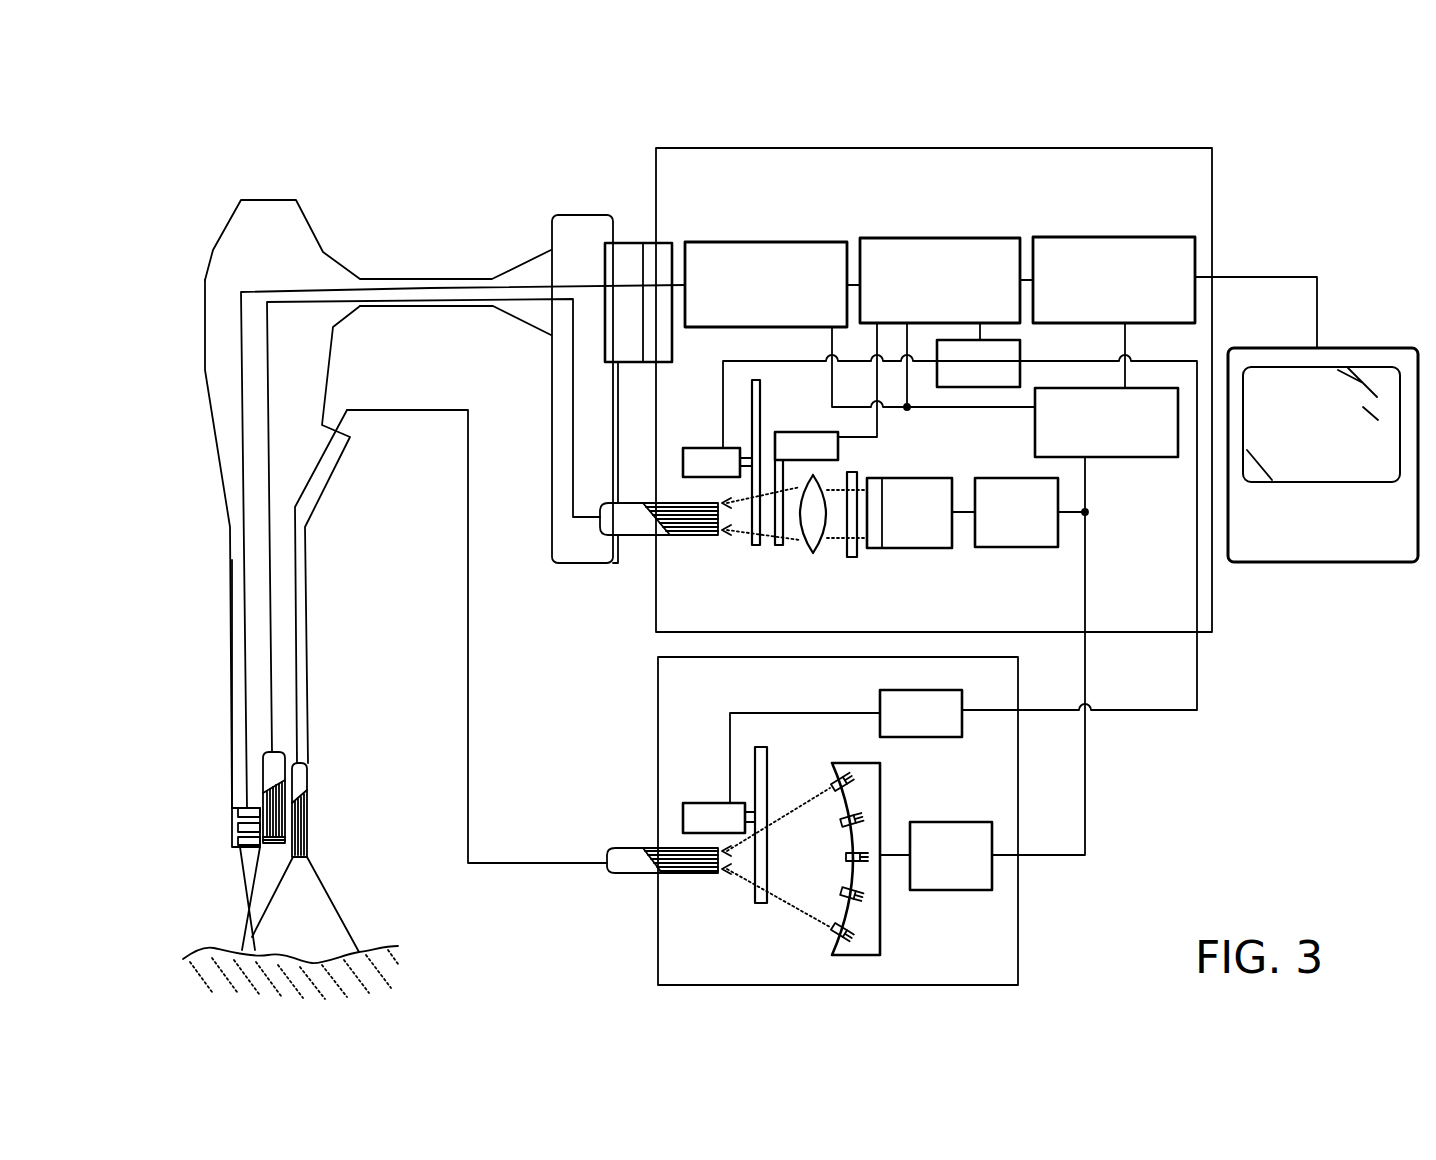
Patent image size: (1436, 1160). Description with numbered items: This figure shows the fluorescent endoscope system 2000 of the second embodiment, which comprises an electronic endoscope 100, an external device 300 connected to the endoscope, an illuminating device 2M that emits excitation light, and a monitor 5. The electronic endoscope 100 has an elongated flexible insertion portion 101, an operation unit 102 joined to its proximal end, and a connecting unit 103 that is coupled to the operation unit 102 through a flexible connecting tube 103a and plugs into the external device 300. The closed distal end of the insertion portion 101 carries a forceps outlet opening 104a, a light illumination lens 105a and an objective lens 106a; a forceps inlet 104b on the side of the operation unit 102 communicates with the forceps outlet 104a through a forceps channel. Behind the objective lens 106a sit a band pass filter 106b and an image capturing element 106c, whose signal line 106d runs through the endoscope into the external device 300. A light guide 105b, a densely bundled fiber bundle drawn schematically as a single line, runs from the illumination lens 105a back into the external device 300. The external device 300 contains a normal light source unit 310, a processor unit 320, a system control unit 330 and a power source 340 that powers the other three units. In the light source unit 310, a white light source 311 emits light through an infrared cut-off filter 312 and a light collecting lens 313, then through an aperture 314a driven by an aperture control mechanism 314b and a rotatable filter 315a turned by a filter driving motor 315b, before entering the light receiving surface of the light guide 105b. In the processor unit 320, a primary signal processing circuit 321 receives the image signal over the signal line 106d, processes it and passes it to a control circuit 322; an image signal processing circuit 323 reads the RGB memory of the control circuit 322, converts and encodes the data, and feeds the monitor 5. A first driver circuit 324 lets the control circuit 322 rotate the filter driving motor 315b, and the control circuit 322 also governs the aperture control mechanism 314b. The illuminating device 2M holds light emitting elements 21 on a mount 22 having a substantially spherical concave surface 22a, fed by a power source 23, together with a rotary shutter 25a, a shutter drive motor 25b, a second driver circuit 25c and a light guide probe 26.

The electronic endoscope 100 is at (316, 553).
The insertion portion 101 is at (229, 580).
The operation unit 102 is at (212, 250).
The connecting unit 103 is at (551, 422).
The flexible connecting tube 103a is at (420, 307).
The forceps outlet opening 104a is at (305, 848).
The forceps inlet 104b is at (347, 432).
The light illumination lens 105a is at (275, 847).
The light guide fiber bundle 105b is at (275, 762).
The objective lens 106a is at (245, 847).
The band pass filter 106b is at (238, 828).
The image capturing element 106c is at (243, 808).
The signal line 106d is at (242, 291).
The light guide probe 26 is at (300, 790).
The external device 300 is at (1214, 200).
The normal light source unit 310 is at (929, 562).
The white light source 311 is at (888, 550).
The infrared cut-off filter 312 is at (845, 558).
The light collecting lens 313 is at (808, 548).
The aperture 314a is at (772, 543).
The aperture control mechanism 314b is at (838, 448).
The rotatable filter 315a is at (793, 408).
The filter driving motor 315b is at (707, 447).
The processor unit 320 is at (1033, 214).
The primary signal processing circuit 321 is at (777, 242).
The control circuit 322 is at (950, 238).
The image signal processing circuit 323 is at (1140, 237).
The first driver circuit 324 is at (1022, 343).
The system control unit 330 is at (1115, 458).
The power source 340 is at (1028, 548).
The monitor 5 is at (1368, 348).
The fluorescent endoscope system 2000 is at (1228, 800).
The illuminating device 2M is at (1024, 910).
The light emitting elements 21 is at (832, 777).
The mount 22 is at (872, 925).
The concave surface 22a is at (830, 947).
The power source 23 is at (942, 822).
The rotary shutter 25a is at (757, 897).
The shutter drive motor 25b is at (718, 772).
The second driver circuit 25c is at (880, 698).